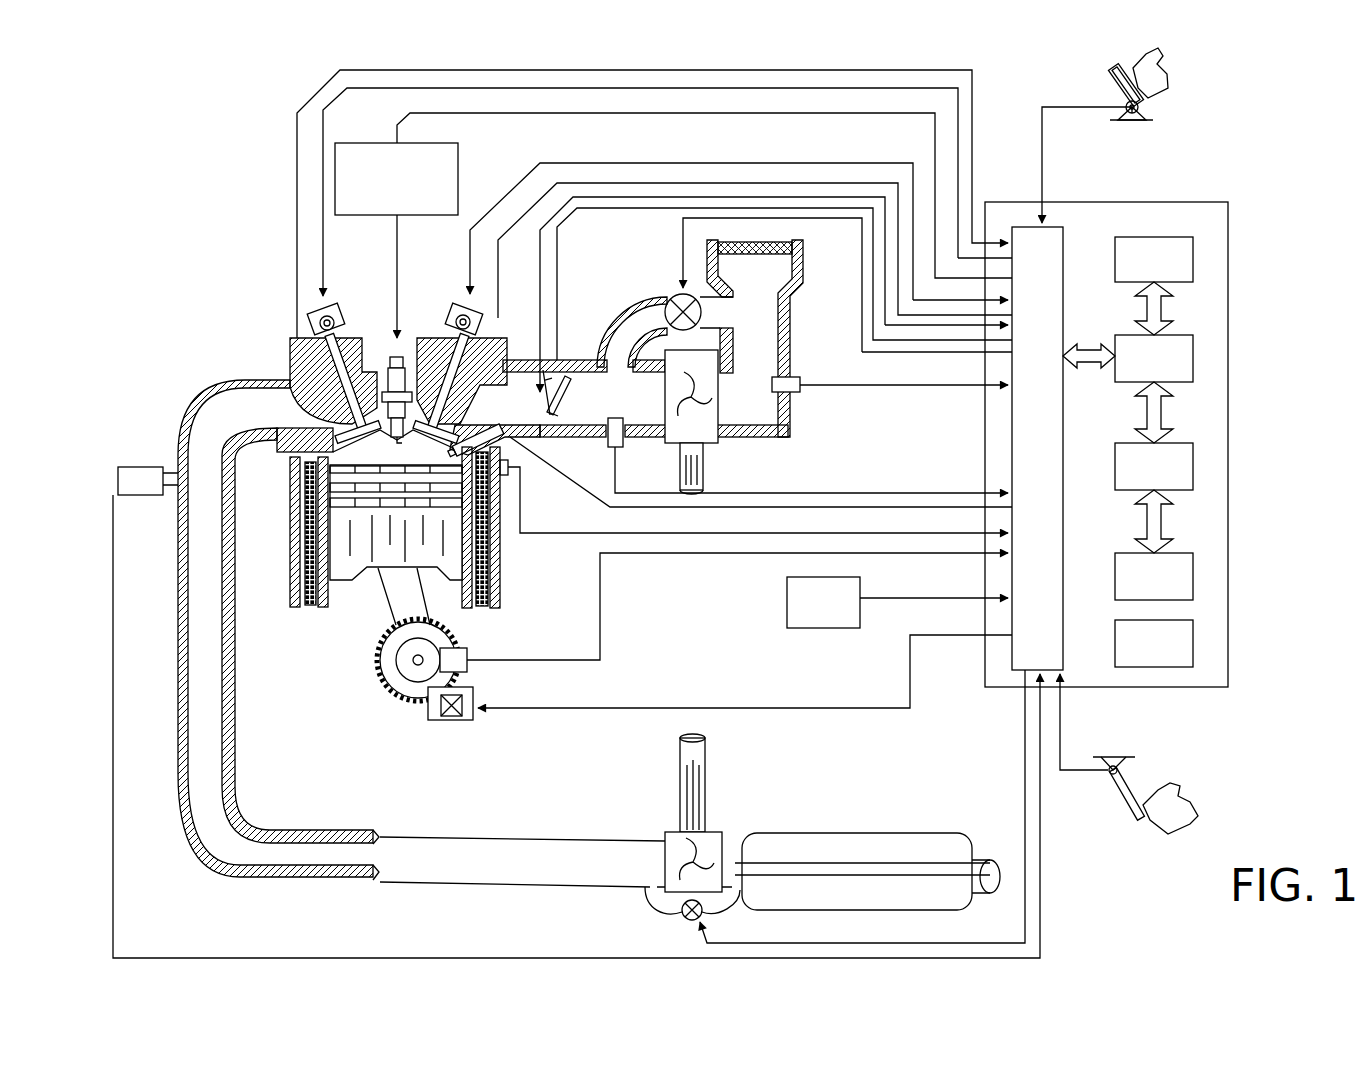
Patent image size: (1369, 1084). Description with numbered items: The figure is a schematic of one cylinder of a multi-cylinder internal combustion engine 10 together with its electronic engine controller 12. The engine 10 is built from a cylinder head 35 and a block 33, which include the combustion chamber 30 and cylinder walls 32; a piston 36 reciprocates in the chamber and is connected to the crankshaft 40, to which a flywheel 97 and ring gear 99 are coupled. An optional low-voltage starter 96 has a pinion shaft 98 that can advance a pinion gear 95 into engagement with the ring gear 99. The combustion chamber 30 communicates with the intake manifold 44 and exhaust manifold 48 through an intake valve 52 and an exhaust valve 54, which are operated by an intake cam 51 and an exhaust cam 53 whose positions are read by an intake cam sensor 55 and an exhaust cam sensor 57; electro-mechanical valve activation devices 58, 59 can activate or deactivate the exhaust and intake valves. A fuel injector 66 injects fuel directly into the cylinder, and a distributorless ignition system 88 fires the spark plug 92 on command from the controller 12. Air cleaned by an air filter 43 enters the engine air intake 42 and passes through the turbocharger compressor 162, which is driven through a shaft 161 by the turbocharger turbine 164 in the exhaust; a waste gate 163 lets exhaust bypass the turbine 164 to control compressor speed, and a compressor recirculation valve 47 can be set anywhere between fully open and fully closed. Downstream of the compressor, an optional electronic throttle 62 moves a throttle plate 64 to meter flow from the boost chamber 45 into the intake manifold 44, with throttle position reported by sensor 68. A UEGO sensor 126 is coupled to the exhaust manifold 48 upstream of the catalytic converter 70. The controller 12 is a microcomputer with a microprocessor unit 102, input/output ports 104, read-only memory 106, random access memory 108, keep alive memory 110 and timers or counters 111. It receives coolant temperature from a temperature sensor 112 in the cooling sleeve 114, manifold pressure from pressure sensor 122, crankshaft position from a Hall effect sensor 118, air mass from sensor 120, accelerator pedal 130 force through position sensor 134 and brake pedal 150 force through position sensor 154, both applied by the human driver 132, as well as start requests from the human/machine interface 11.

The internal combustion engine 10 is at (218, 292).
The human/machine interface 11 is at (823, 602).
The electronic engine controller 12 is at (1217, 202).
The combustion chamber 30 is at (397, 443).
The cylinder walls 32 is at (337, 598).
The block 33 is at (286, 491).
The cylinder head 35 is at (284, 336).
The piston 36 is at (373, 600).
The crankshaft 40 is at (397, 695).
The engine air intake 42 is at (620, 262).
The air filter 43 is at (778, 255).
The intake manifold 44 is at (511, 413).
The boost chamber 45 is at (612, 411).
The compressor recirculation valve 47 is at (675, 298).
The exhaust manifold 48 is at (245, 419).
The intake cam 51 is at (448, 302).
The intake valve 52 is at (445, 412).
The exhaust cam 53 is at (337, 307).
The exhaust valve 54 is at (290, 378).
The intake cam sensor 55 is at (482, 332).
The exhaust cam sensor 57 is at (305, 325).
The valve activation device 58 is at (345, 320).
The valve activation device 59 is at (452, 332).
The electronic throttle 62 is at (572, 396).
The throttle plate 64 is at (562, 410).
The fuel injector 66 is at (497, 437).
The throttle position sensor 68 is at (540, 362).
The catalytic converter 70 is at (787, 833).
The distributorless ignition system 88 is at (352, 143).
The spark plug 92 is at (408, 355).
The pinion gear 95 is at (458, 714).
The starter 96 is at (468, 723).
The flywheel 97 is at (390, 672).
The pinion shaft 98 is at (440, 713).
The ring gear 99 is at (417, 697).
The microprocessor unit 102 is at (1193, 350).
The input/output ports 104 is at (1067, 233).
The read-only memory 106 is at (1192, 257).
The random access memory 108 is at (1193, 463).
The keep alive memory 110 is at (1193, 573).
The timers and/or counters 111 is at (1193, 643).
The temperature sensor 112 is at (508, 478).
The cooling sleeve 114 is at (487, 553).
The Hall effect sensor 118 is at (467, 648).
The air mass sensor 120 is at (798, 378).
The pressure sensor 122 is at (607, 449).
The Universal Exhaust Gas Oxygen sensor 126 is at (118, 470).
The accelerator pedal 130 is at (1110, 80).
The human driver 132 is at (1162, 68).
The position sensor 134 is at (1147, 107).
The brake pedal 150 is at (1138, 823).
The position sensor 154 is at (1102, 768).
The shaft 161 is at (680, 466).
The turbocharger compressor 162 is at (707, 423).
The waste gate 163 is at (684, 920).
The turbocharger turbine 164 is at (673, 828).